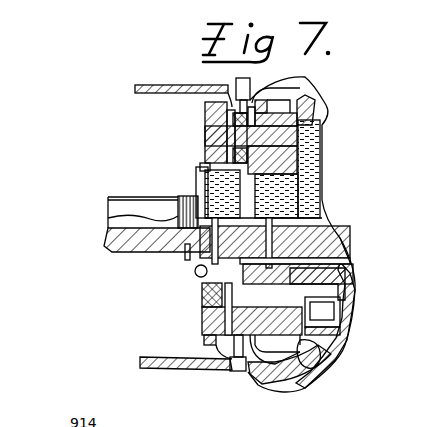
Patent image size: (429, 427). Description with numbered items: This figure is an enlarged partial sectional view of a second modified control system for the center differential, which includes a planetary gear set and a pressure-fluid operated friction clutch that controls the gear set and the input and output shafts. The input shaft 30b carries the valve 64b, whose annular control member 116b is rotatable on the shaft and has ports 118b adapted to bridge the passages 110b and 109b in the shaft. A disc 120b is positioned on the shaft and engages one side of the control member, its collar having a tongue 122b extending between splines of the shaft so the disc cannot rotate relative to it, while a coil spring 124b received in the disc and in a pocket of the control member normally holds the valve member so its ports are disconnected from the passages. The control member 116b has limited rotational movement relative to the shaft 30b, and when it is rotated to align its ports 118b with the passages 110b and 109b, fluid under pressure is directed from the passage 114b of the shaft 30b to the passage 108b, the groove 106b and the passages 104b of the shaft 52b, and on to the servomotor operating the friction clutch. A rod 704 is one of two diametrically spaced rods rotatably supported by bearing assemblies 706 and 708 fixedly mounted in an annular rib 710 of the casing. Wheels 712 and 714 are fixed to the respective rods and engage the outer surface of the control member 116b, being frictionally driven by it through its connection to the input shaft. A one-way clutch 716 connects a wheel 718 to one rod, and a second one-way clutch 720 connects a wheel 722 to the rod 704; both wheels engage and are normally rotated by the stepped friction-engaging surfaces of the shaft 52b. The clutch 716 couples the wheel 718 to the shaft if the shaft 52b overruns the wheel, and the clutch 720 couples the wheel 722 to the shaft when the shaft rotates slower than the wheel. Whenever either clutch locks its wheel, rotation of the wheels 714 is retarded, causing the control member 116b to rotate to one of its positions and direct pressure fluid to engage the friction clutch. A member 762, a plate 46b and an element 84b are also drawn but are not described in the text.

The bearing assembly 708 is at (231, 81).
The wheel 718 is at (282, 100).
The one-way clutch 716 is at (300, 112).
The wheel 712 is at (207, 113).
The member 762 is at (207, 130).
The valve 64b is at (207, 161).
The annular control member 116b is at (201, 175).
The disc 120b is at (200, 181).
The input shaft 30b is at (110, 202).
The passage 114b is at (108, 213).
The passage 110b is at (108, 238).
The tongue 122b is at (183, 260).
The coil spring 124b is at (195, 272).
The ports 118b is at (198, 290).
The rod 704 is at (200, 319).
The wheel 714 is at (204, 340).
The lower plate 46b is at (189, 373).
The bearing assembly 706 is at (232, 358).
The annular rib 710 is at (242, 373).
The one-way clutch 720 is at (268, 342).
The wheel 722 is at (312, 376).
The passage 109b is at (298, 205).
The passage 108b is at (285, 226).
The groove 106b is at (305, 258).
The passages 104b is at (346, 266).
The shaft 52b is at (342, 283).
The box 84b is at (332, 304).